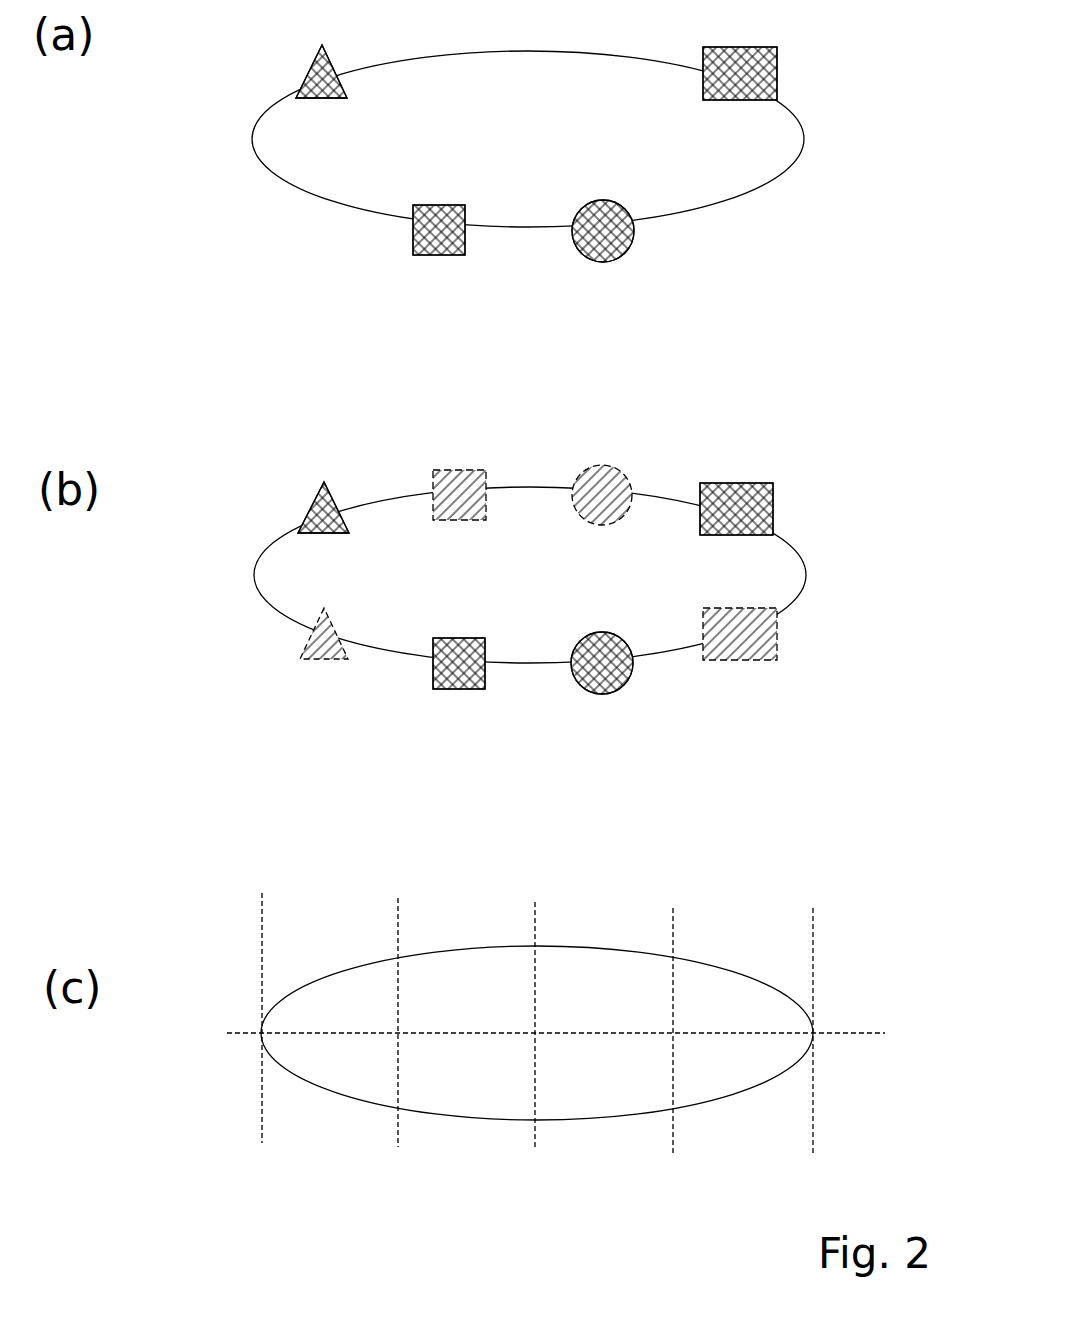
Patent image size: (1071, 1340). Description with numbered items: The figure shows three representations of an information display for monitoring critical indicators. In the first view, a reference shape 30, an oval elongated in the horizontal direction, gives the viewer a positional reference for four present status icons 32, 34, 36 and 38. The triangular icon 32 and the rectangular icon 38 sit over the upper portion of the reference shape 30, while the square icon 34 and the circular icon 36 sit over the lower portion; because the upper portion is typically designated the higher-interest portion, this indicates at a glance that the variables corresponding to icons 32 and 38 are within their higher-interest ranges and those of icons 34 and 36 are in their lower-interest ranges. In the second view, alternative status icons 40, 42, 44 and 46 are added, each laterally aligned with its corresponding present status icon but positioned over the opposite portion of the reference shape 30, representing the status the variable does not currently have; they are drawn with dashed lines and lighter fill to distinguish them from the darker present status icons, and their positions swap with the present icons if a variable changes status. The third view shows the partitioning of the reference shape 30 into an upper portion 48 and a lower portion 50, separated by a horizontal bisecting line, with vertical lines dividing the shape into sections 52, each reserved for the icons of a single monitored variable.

The reference shape 30 is at (557, 53).
The present status icon 32 is at (338, 103).
The present status icon 34 is at (453, 247).
The present status icon 36 is at (612, 240).
The present status icon 38 is at (760, 65).
The alternative status icon 40 is at (300, 655).
The alternative status icon 42 is at (457, 475).
The alternative status icon 44 is at (620, 482).
The alternative status icon 46 is at (763, 652).
The upper portion 48 is at (712, 982).
The lower portion 50 is at (708, 1085).
The sections 52 is at (732, 912).